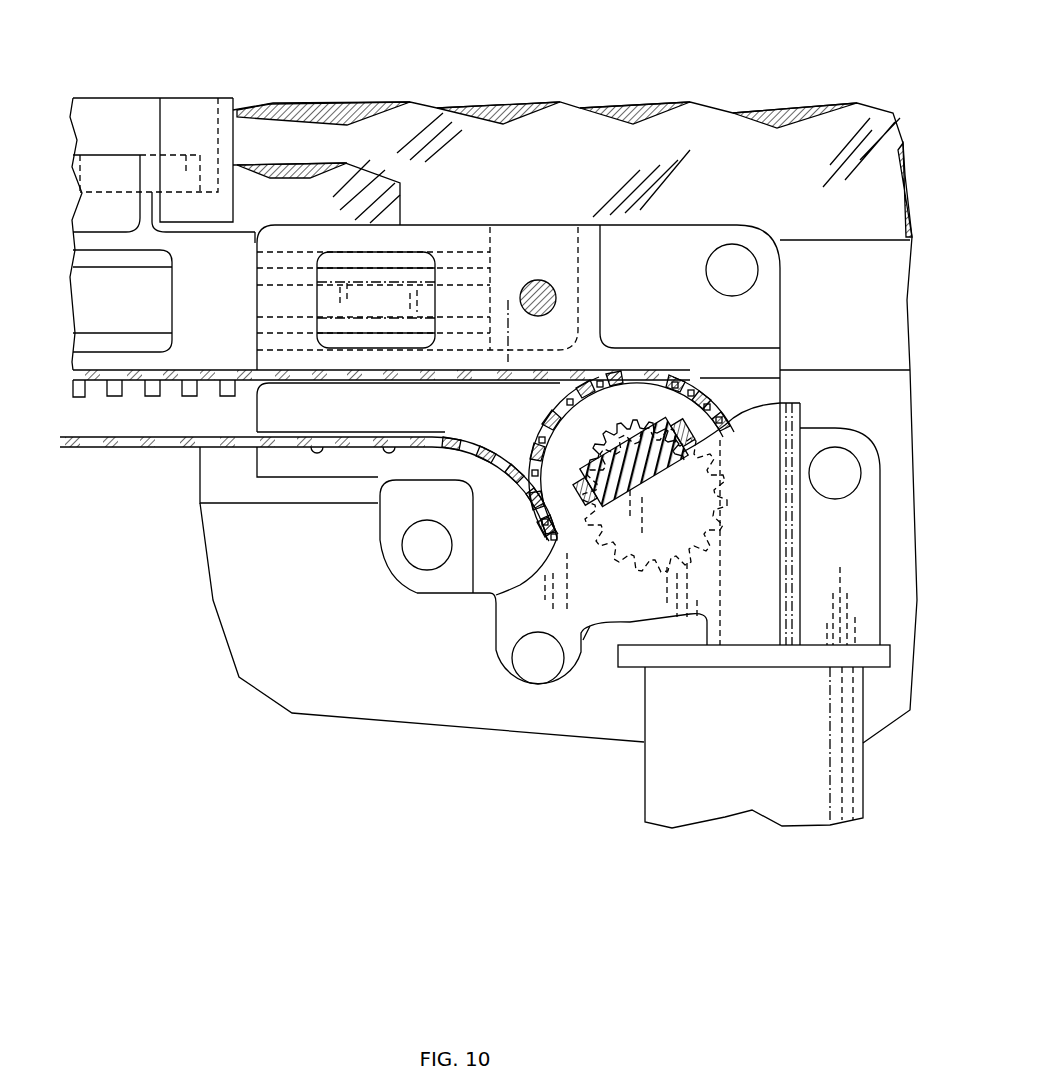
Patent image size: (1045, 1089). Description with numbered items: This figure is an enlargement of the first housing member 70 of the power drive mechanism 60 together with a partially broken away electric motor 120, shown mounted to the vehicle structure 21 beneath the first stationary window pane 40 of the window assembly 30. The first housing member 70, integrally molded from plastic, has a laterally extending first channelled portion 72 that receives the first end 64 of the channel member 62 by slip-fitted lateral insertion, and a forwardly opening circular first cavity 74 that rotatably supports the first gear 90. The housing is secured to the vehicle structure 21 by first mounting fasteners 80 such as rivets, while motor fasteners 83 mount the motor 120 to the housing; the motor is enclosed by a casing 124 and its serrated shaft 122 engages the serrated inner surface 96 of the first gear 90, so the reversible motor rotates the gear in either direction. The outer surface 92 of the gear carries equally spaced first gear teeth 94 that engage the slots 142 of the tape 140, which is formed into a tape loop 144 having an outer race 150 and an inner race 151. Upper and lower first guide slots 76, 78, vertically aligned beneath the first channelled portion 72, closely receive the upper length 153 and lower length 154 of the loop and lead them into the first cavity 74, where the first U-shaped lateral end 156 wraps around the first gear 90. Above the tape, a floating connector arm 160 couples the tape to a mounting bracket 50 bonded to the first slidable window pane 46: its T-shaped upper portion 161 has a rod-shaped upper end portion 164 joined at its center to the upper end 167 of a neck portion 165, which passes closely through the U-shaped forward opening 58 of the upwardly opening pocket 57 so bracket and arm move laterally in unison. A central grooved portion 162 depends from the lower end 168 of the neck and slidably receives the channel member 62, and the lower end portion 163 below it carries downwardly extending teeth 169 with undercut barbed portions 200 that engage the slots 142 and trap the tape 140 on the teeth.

The vehicle structure 21 is at (318, 712).
The window assembly 30 is at (815, 104).
The first stationary window pane 40 is at (570, 125).
The first slidable window pane 46 is at (340, 178).
The mounting bracket 50 is at (113, 100).
The upwardly opening pocket 57 is at (210, 108).
The U-shaped forward opening 58 is at (140, 208).
The power drive mechanism 60 is at (410, 778).
The channel member 62 is at (407, 262).
The first end 64 is at (497, 293).
The first housing member 70 is at (712, 225).
The first channelled portion 72 is at (467, 298).
The first cavity 74 is at (620, 467).
The upper first guide slot 76 is at (297, 370).
The lower first guide slot 78 is at (317, 450).
The first mounting fastener 80 is at (740, 270).
The motor fastener 83 is at (545, 287).
The first gear 90 is at (655, 402).
The outer surface 92 is at (560, 395).
The first gear teeth 94 is at (590, 380).
The serrated inner surface 96 is at (615, 480).
The electric motor 120 is at (728, 815).
The serrated shaft 122 is at (650, 466).
The casing 124 is at (627, 590).
The tape 140 is at (184, 450).
The slots 142 is at (385, 390).
The tape loop 144 is at (248, 450).
The outer race 150 is at (393, 437).
The inner race 151 is at (360, 450).
The upper length 153 is at (280, 380).
The lower length 154 is at (295, 447).
The first U-shaped lateral end 156 is at (690, 374).
The connector arm 160 is at (245, 232).
The T-shaped upper portion 161 is at (95, 177).
The central grooved portion 162 is at (85, 242).
The lower end portion 163 is at (80, 378).
The rod-shaped upper end portion 164 is at (188, 158).
The neck portion 165 is at (153, 205).
The upper end 167 is at (150, 160).
The lower end 168 is at (148, 227).
The teeth 169 is at (153, 393).
The undercut barbed portion 200 is at (101, 382).